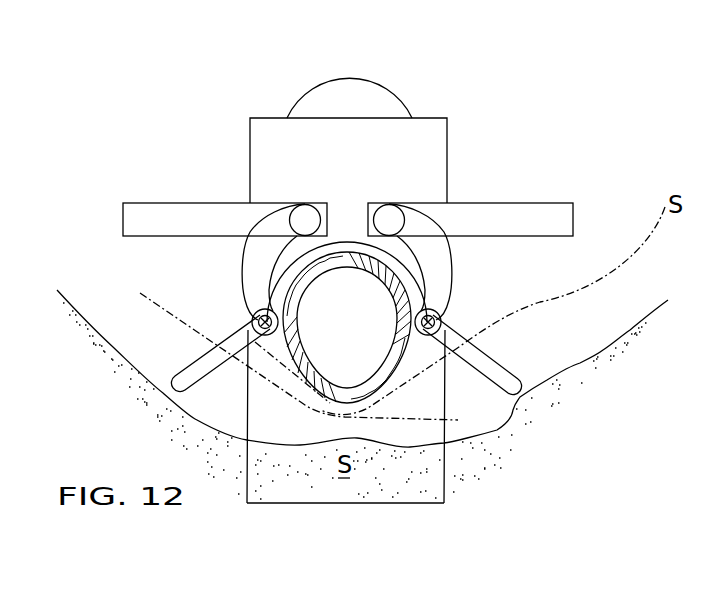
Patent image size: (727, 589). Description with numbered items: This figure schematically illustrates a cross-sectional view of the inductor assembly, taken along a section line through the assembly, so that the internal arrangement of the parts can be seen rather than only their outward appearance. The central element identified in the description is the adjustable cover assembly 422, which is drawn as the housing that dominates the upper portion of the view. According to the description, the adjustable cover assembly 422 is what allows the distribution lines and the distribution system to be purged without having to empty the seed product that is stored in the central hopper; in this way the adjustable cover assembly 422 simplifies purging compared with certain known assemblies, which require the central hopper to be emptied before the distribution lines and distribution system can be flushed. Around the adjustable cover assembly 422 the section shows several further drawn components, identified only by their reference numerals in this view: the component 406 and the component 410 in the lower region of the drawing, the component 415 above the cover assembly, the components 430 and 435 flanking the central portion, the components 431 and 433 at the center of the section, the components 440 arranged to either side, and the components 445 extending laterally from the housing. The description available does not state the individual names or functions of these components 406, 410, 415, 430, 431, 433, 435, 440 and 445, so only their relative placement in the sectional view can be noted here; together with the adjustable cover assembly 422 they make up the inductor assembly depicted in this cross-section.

The tissue 406 is at (423, 462).
The housing base 410 is at (425, 505).
The actuator knob 415 is at (348, 78).
The adjustable cover assembly 422 is at (468, 183).
The stabilizer legs 430 is at (190, 362).
The tubular member 431 is at (348, 252).
The collar 433 is at (400, 263).
The pivot pins 435 is at (254, 311).
The clamp arms 440 is at (241, 276).
The flanges 445 is at (193, 203).